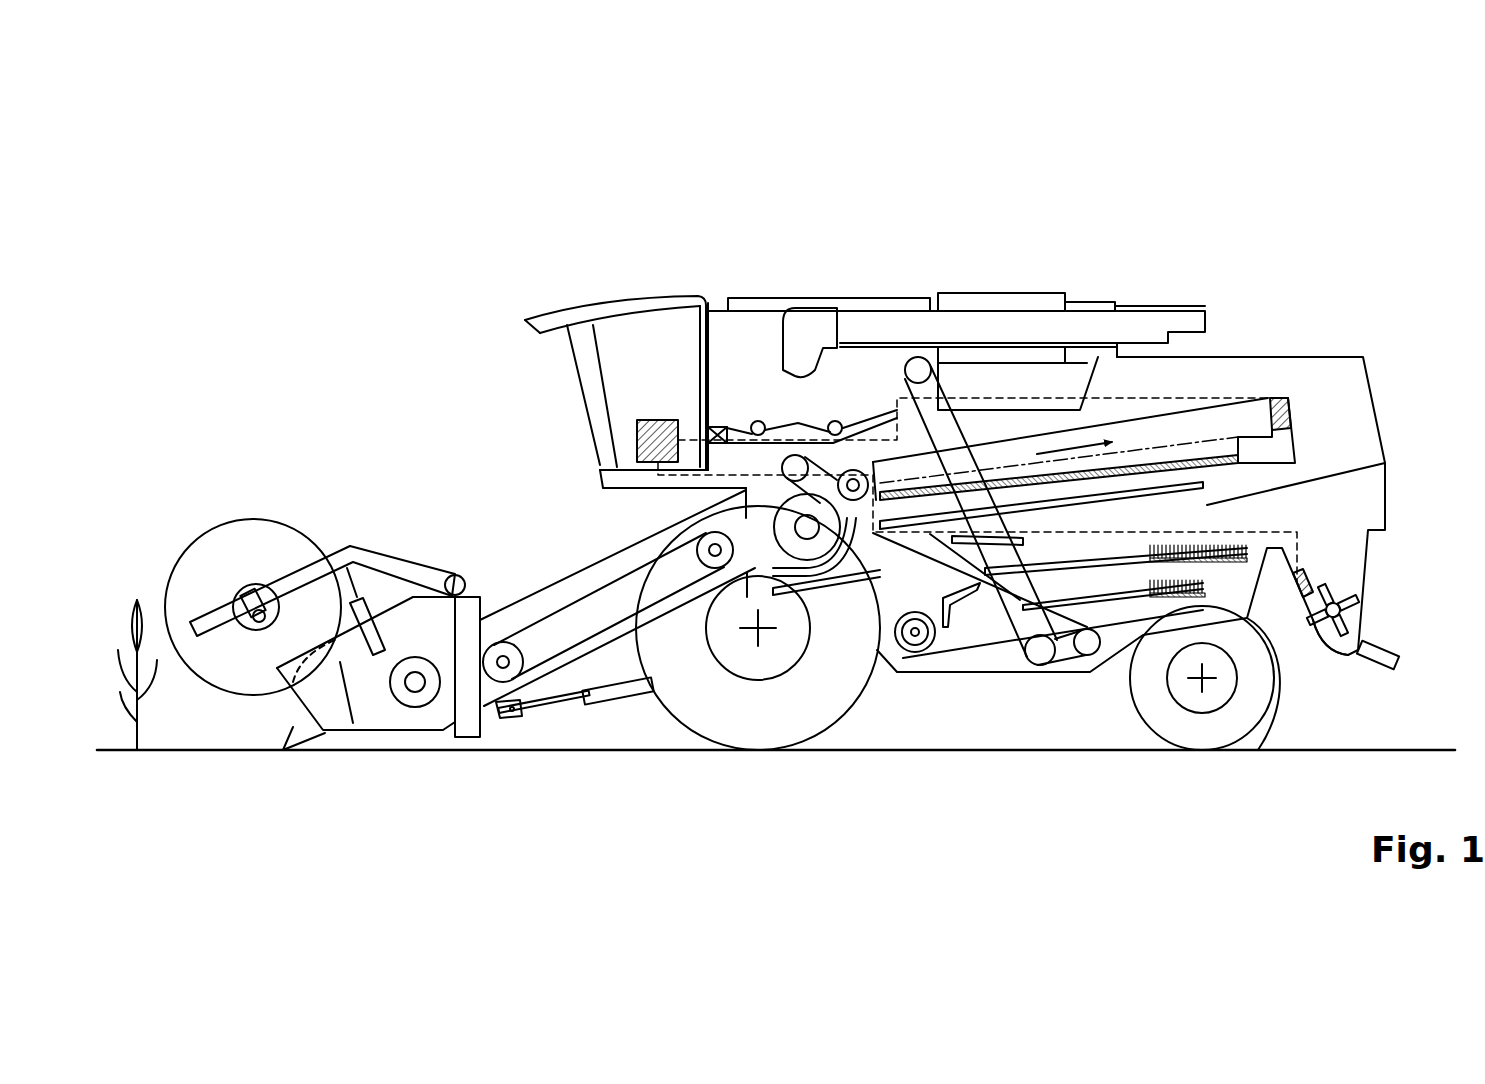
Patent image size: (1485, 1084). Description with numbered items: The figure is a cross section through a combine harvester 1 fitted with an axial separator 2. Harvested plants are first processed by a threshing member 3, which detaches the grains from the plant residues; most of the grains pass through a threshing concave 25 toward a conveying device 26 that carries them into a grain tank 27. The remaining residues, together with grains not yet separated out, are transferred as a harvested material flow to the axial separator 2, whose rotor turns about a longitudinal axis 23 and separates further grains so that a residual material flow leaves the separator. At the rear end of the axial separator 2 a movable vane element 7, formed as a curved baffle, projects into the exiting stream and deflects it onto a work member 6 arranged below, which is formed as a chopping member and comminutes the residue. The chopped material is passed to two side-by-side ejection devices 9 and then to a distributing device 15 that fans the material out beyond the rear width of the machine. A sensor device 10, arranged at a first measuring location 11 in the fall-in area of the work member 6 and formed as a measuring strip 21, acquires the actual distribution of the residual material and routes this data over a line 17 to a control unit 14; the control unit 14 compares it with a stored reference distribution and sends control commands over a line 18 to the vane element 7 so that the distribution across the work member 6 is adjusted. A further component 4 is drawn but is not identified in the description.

The combine harvester 1 is at (600, 200).
The axial separator 2 is at (1007, 425).
The threshing member 3 is at (790, 570).
The grain tank 4 is at (1062, 433).
The work member 6 is at (1345, 601).
The vane element 7 is at (1306, 402).
The ejection devices 9 is at (1360, 652).
The sensor device 10 is at (1316, 576).
The first measuring location 11 is at (1290, 592).
The control unit 14 is at (640, 440).
The distributing device 15 is at (1385, 637).
The line 17 is at (745, 475).
The line 18 is at (1127, 397).
The measuring strip 21 is at (1277, 653).
The longitudinal axis 23 is at (1165, 443).
The threshing concave 25 is at (810, 612).
The conveying device 26 is at (1043, 652).
The grain tank 27 is at (757, 320).